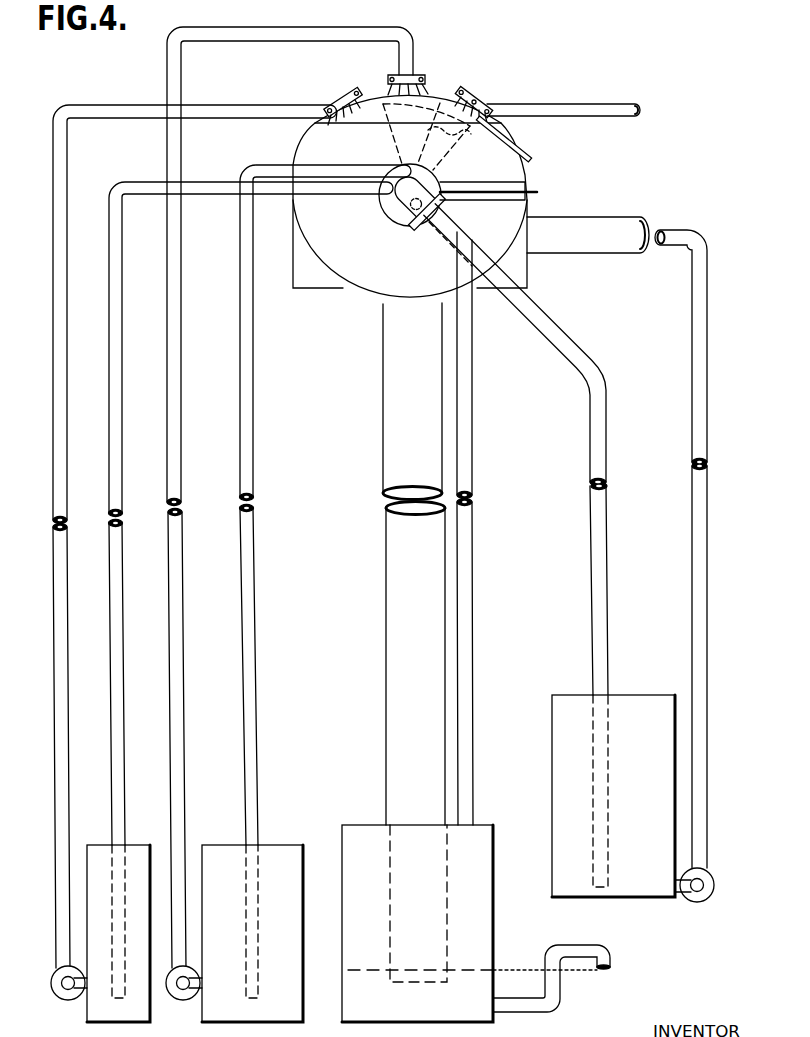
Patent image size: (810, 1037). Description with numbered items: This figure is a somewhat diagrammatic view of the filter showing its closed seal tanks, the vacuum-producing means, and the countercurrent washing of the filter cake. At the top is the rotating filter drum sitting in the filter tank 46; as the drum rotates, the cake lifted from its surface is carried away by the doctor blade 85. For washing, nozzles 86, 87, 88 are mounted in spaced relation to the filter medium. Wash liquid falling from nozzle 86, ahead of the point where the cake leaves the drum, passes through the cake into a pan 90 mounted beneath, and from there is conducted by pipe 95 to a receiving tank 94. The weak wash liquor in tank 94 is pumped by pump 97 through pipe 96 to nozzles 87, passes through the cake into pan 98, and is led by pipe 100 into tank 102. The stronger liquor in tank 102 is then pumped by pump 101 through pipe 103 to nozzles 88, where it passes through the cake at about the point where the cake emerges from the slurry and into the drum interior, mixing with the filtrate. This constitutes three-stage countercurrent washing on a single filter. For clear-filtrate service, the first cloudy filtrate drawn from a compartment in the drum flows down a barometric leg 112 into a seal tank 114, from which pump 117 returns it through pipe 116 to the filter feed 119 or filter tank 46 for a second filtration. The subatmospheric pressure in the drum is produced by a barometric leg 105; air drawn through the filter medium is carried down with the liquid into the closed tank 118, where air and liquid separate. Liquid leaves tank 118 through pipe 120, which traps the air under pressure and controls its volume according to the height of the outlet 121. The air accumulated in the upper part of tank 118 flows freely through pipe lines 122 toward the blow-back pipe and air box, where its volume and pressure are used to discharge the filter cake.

The filter tank 46 is at (370, 283).
The doctor blade 85 is at (532, 156).
The nozzle 86 is at (473, 93).
The nozzle 87 is at (418, 73).
The nozzle 88 is at (333, 100).
The pan 90 is at (455, 143).
The pan 98 is at (426, 136).
The receiving tank 94 is at (277, 854).
The pipe 95 is at (290, 147).
The pipe 96 is at (182, 712).
The pump 97 is at (182, 998).
The pipe 100 is at (270, 187).
The pump 101 is at (63, 995).
The tank 102 is at (135, 856).
The pipe 103 is at (53, 660).
The barometric leg 105 is at (398, 440).
The barometric leg 112 is at (600, 530).
The seal tank 114 is at (560, 771).
The pipe 116 is at (704, 594).
The pump 117 is at (713, 879).
The closed tank 118 is at (357, 838).
The filter feed 119 is at (593, 210).
The pipe 120 is at (563, 950).
The outlet 121 is at (610, 965).
The pipe lines 122 is at (472, 565).